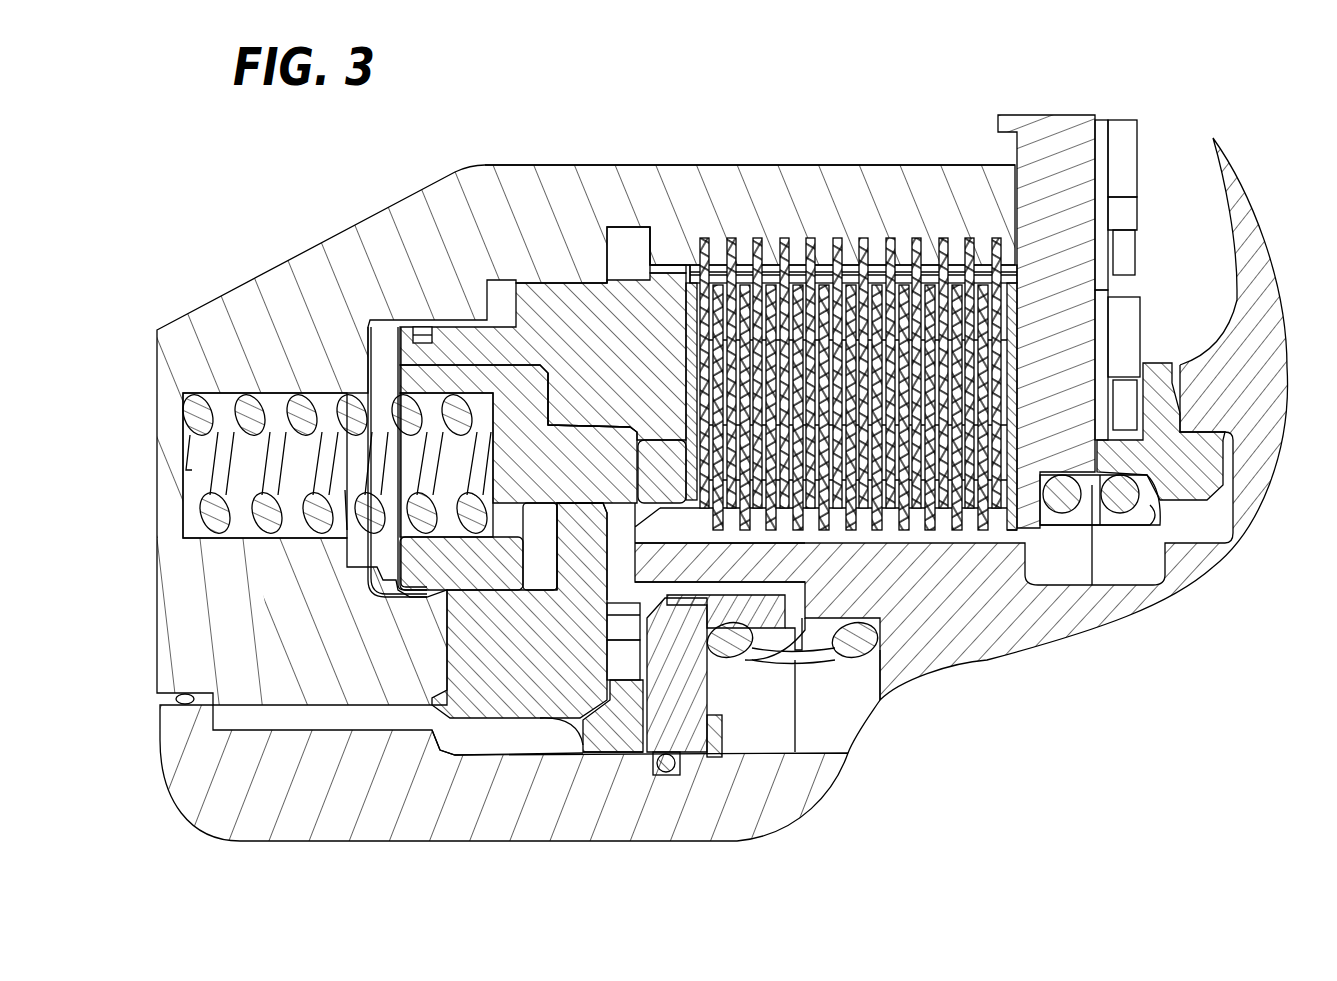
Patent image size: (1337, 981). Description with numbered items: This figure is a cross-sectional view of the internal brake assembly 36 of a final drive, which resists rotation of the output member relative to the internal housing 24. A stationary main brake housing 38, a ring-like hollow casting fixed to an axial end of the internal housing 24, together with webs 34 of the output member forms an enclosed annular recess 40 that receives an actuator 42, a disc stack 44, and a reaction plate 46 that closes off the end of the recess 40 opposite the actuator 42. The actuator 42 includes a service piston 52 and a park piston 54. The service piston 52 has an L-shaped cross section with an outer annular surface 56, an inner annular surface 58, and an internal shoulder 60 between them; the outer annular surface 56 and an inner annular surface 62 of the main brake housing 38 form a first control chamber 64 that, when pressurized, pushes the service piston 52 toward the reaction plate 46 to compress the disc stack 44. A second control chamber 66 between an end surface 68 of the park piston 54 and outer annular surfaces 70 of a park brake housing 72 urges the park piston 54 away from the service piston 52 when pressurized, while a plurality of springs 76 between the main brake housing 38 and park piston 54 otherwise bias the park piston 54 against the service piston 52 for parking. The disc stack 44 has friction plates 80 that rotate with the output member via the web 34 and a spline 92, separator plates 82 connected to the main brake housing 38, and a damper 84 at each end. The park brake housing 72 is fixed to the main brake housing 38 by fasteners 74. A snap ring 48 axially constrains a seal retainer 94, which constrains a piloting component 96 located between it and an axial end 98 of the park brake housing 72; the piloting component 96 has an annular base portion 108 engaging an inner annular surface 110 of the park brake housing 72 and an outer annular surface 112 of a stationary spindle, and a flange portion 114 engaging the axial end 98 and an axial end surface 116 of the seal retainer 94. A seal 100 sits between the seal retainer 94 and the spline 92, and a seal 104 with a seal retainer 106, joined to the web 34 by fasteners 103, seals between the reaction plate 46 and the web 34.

The internal housing 24 is at (326, 800).
The webs 34 is at (1245, 397).
The brake assembly 36 is at (1240, 112).
The main brake housing 38 is at (294, 348).
The recess 40 is at (390, 322).
The actuator 42 is at (485, 205).
The disc stack 44 is at (848, 352).
The reaction plate 46 is at (1070, 428).
The snap ring 48 is at (738, 718).
The service piston 52 is at (565, 348).
The park piston 54 is at (574, 476).
The outer annular surface 56 is at (616, 290).
The inner annular surface 58 is at (650, 492).
The internal shoulder 60 is at (558, 414).
The inner annular surface 62 is at (612, 232).
The first control chamber 64 is at (645, 232).
The second control chamber 66 is at (553, 535).
The end surface 68 is at (520, 548).
The outer annular surfaces 70 is at (545, 552).
The park brake housing 72 is at (520, 668).
The fasteners 74 is at (615, 642).
The springs 76 is at (262, 525).
The friction plates 80 is at (865, 543).
The separator plates 82 is at (832, 240).
The damper 84 is at (692, 310).
The spline 92 is at (944, 619).
The seal retainer 94 is at (688, 701).
The piloting component 96 is at (619, 739).
The axial end 98 is at (636, 568).
The seal 100 is at (815, 665).
The fasteners 103 is at (1125, 408).
The seal 104 is at (1098, 522).
The seal retainer 106 is at (1200, 475).
The annular base portion 108 is at (592, 745).
The inner annular surface 110 is at (568, 718).
The outer annular surface 112 is at (500, 760).
The flange portion 114 is at (662, 770).
The axial end surface 116 is at (718, 655).